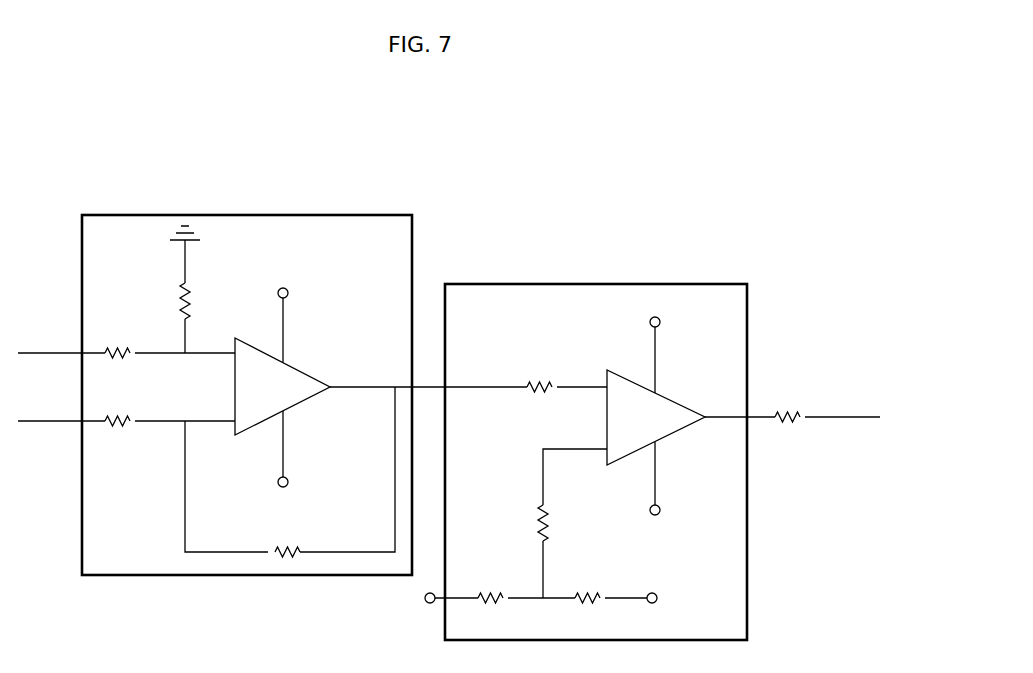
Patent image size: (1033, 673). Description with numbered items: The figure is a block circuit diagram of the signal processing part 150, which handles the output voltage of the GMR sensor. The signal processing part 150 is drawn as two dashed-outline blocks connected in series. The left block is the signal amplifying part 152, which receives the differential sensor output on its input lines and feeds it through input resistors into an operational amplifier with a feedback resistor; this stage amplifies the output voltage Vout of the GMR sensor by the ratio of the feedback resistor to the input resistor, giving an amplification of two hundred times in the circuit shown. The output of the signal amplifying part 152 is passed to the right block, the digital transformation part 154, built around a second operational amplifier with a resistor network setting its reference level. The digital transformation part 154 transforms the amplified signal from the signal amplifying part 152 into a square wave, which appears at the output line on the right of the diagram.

The signal processing part 150 is at (133, 136).
The signal amplifying part 152 is at (248, 215).
The digital transformation part 154 is at (595, 284).